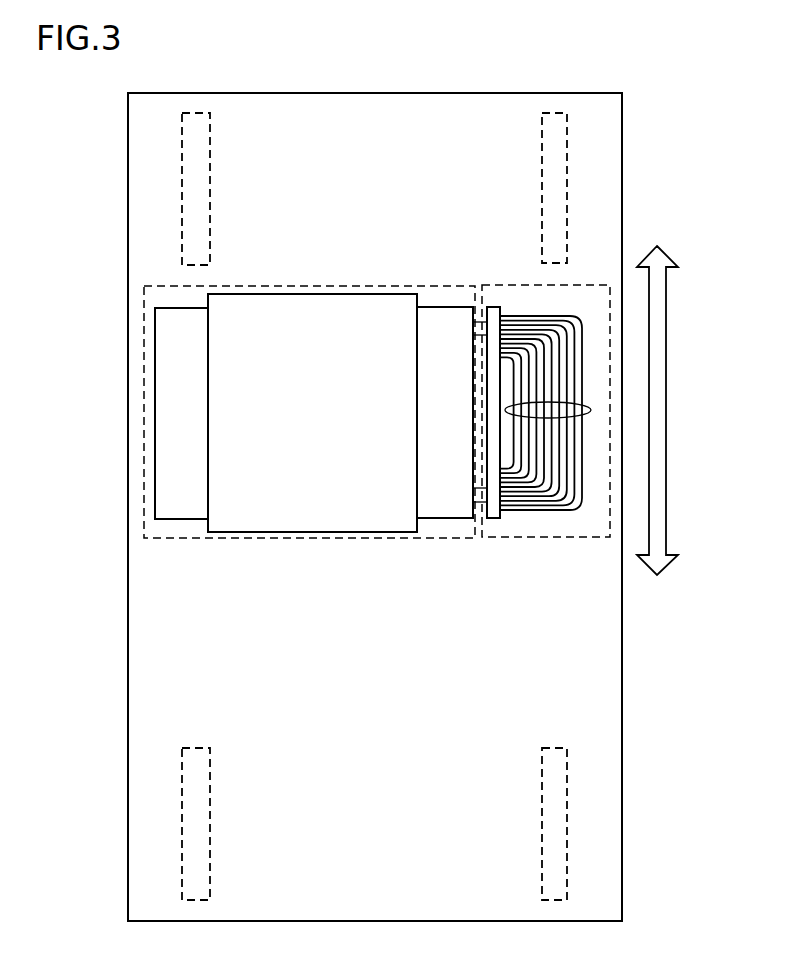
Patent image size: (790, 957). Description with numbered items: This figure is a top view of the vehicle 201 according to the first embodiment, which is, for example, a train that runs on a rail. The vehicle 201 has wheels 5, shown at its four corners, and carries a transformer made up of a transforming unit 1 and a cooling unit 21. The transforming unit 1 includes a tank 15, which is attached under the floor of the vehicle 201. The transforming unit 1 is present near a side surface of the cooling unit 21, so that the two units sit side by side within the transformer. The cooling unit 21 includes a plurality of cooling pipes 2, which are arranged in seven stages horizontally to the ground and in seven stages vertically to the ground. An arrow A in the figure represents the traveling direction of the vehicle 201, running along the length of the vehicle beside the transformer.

The vehicle 201 is at (611, 77).
The wheel 5 is at (182, 178).
The transforming unit 1 is at (144, 338).
The tank 15 is at (208, 303).
The cooling pipes 2 is at (590, 403).
The cooling unit 21 is at (545, 539).
The arrow A is at (658, 397).